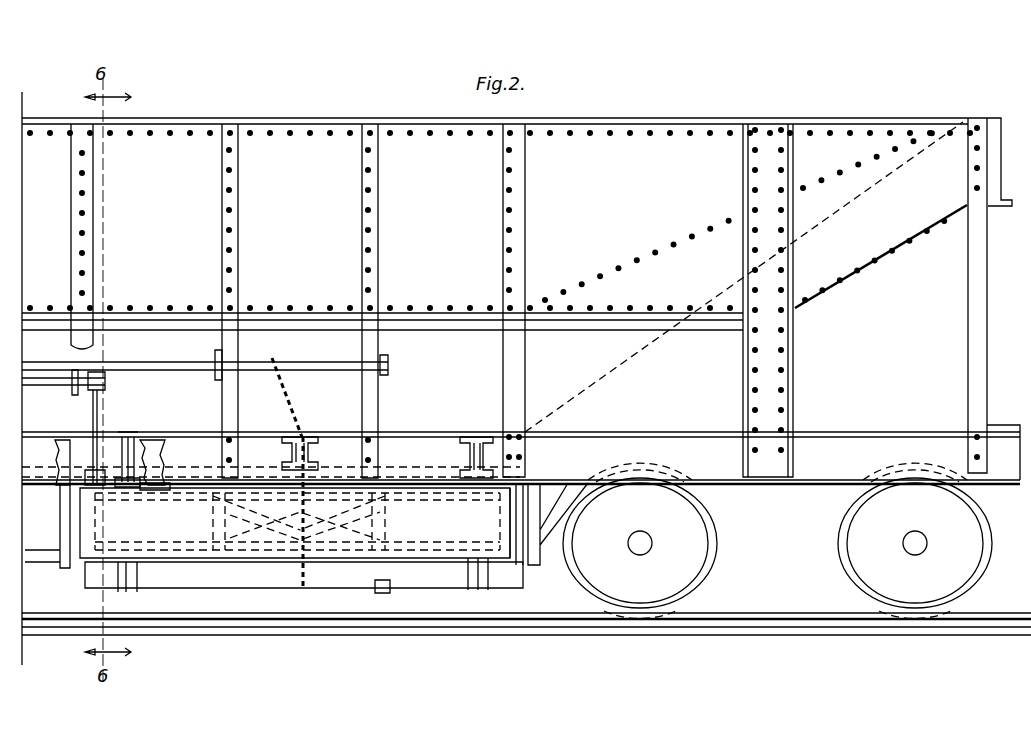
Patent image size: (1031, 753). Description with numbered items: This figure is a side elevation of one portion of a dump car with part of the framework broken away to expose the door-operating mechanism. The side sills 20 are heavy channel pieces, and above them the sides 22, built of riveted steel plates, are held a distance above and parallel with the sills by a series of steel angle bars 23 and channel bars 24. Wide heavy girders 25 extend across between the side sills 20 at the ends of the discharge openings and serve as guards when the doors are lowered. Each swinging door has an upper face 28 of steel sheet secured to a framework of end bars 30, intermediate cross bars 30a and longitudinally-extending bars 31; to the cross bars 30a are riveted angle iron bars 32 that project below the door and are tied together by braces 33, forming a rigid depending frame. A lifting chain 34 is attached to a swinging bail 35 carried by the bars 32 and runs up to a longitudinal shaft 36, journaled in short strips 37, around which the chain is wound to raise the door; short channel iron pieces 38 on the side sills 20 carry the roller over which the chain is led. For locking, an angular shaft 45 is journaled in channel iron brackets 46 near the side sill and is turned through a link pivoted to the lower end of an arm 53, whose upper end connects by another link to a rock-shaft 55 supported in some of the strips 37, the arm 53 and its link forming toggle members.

The side sill 20 is at (668, 432).
The side of the car 22 is at (641, 144).
The steel angle bar 23 is at (90, 196).
The channel bar 24 is at (793, 364).
The girder 25 is at (62, 506).
The upper face of the door 28 is at (496, 540).
The end bar 30 is at (96, 526).
The intermediate cross bar 30a is at (215, 499).
The longitudinally-extending bar 31 is at (290, 536).
The angle iron bar 32 is at (214, 524).
The brace 33 is at (272, 534).
The lifting chain 34 is at (290, 408).
The swinging bail 35 is at (380, 592).
The shaft 36 is at (300, 362).
The strip 37 is at (215, 360).
The channel iron piece 38 is at (287, 437).
The shaft 45 is at (165, 476).
The bracket 46 is at (140, 437).
The arm 53 is at (100, 408).
The rock-shaft 55 is at (72, 382).